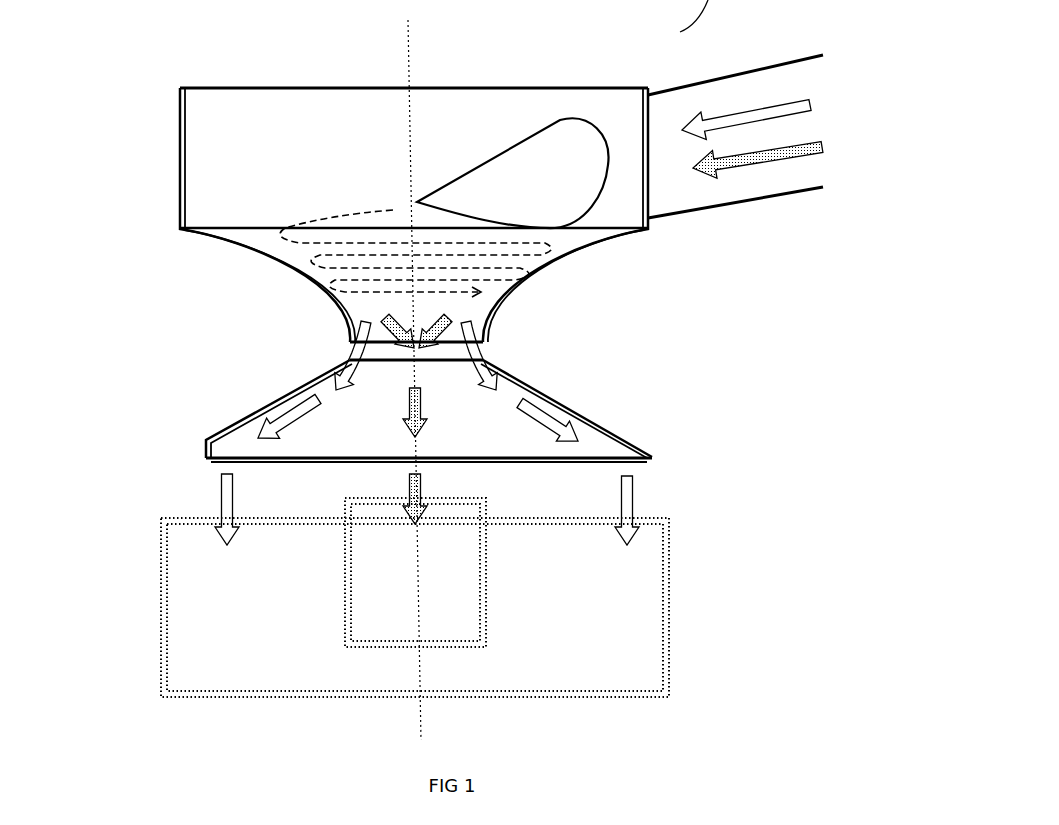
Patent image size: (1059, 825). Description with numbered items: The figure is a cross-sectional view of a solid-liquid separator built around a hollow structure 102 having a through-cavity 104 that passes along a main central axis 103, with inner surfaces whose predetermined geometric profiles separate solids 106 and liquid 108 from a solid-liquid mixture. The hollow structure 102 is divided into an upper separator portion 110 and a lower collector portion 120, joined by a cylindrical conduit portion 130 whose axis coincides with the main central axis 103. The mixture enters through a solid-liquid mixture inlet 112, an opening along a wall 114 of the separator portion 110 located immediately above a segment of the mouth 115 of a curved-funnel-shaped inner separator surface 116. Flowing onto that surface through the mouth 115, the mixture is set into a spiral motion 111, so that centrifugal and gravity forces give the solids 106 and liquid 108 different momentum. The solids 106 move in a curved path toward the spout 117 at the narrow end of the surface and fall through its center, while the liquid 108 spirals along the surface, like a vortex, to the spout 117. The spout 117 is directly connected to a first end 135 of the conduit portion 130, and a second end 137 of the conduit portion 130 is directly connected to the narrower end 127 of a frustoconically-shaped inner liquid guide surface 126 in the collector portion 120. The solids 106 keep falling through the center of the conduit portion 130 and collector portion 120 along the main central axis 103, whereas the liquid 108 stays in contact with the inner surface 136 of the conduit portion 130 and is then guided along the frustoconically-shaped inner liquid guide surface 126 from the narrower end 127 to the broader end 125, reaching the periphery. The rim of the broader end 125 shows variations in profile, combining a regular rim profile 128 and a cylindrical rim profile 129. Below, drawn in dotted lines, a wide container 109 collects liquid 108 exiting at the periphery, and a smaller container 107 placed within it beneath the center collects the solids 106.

The hollow structure 102 is at (163, 75).
The main central axis 103 is at (412, 42).
The through-cavity 104 is at (367, 70).
The solids 106 is at (822, 149).
The container 107 is at (486, 603).
The liquid 108 is at (812, 104).
The container 109 is at (668, 622).
The separator portion 110 is at (333, 171).
The spiral motion 111 is at (356, 208).
The solid-liquid mixture inlet 112 is at (492, 168).
The wall 114 is at (270, 105).
The mouth 115 is at (212, 225).
The curved-funnel-shaped inner separator surface 116 is at (248, 247).
The spout 117 is at (407, 336).
The collector portion 120 is at (381, 421).
The broader end 125 is at (465, 456).
The frustoconically-shaped inner liquid guide surface 126 is at (328, 385).
The narrower end 127 is at (382, 366).
The regular rim profile 128 is at (655, 457).
The cylindrical rim profile 129 is at (208, 458).
The conduit portion 130 is at (492, 343).
The first end 135 is at (488, 352).
The inner surface 136 is at (433, 362).
The second end 137 is at (348, 348).